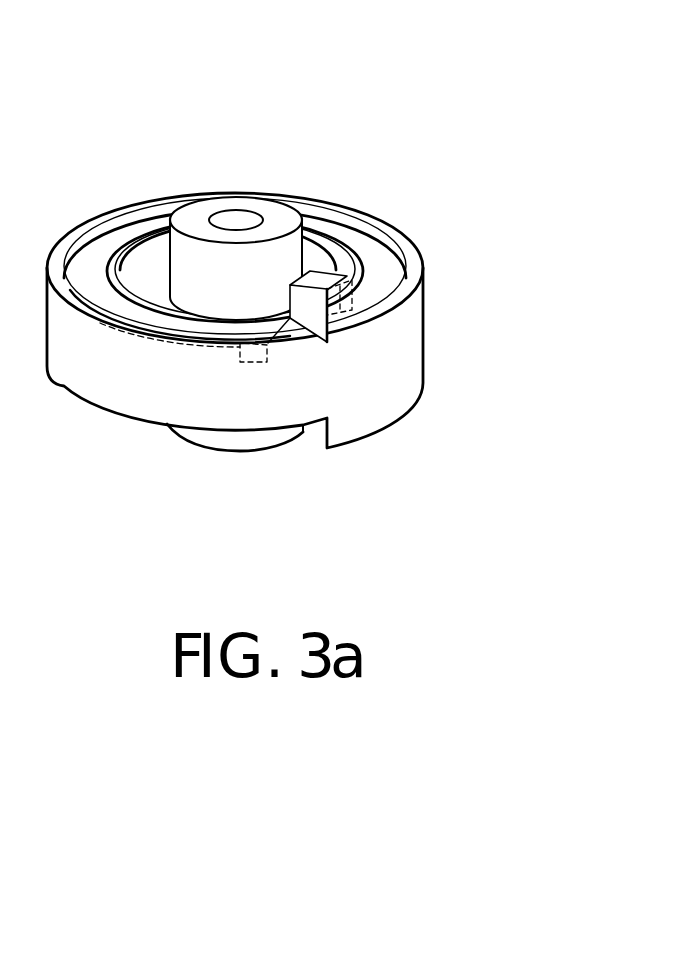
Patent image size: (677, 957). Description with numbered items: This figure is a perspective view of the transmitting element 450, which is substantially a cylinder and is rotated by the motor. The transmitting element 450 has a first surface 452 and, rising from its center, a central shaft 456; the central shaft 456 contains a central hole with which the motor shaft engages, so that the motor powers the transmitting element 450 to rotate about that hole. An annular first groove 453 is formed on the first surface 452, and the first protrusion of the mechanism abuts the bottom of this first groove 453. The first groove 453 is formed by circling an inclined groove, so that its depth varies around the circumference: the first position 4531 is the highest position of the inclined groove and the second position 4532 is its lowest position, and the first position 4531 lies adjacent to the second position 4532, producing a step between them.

The transmitting element 450 is at (190, 68).
The first surface 452 is at (413, 247).
The first groove 453 is at (367, 247).
The central shaft 456 is at (262, 208).
The first position 4531 is at (330, 293).
The second position 4532 is at (255, 353).